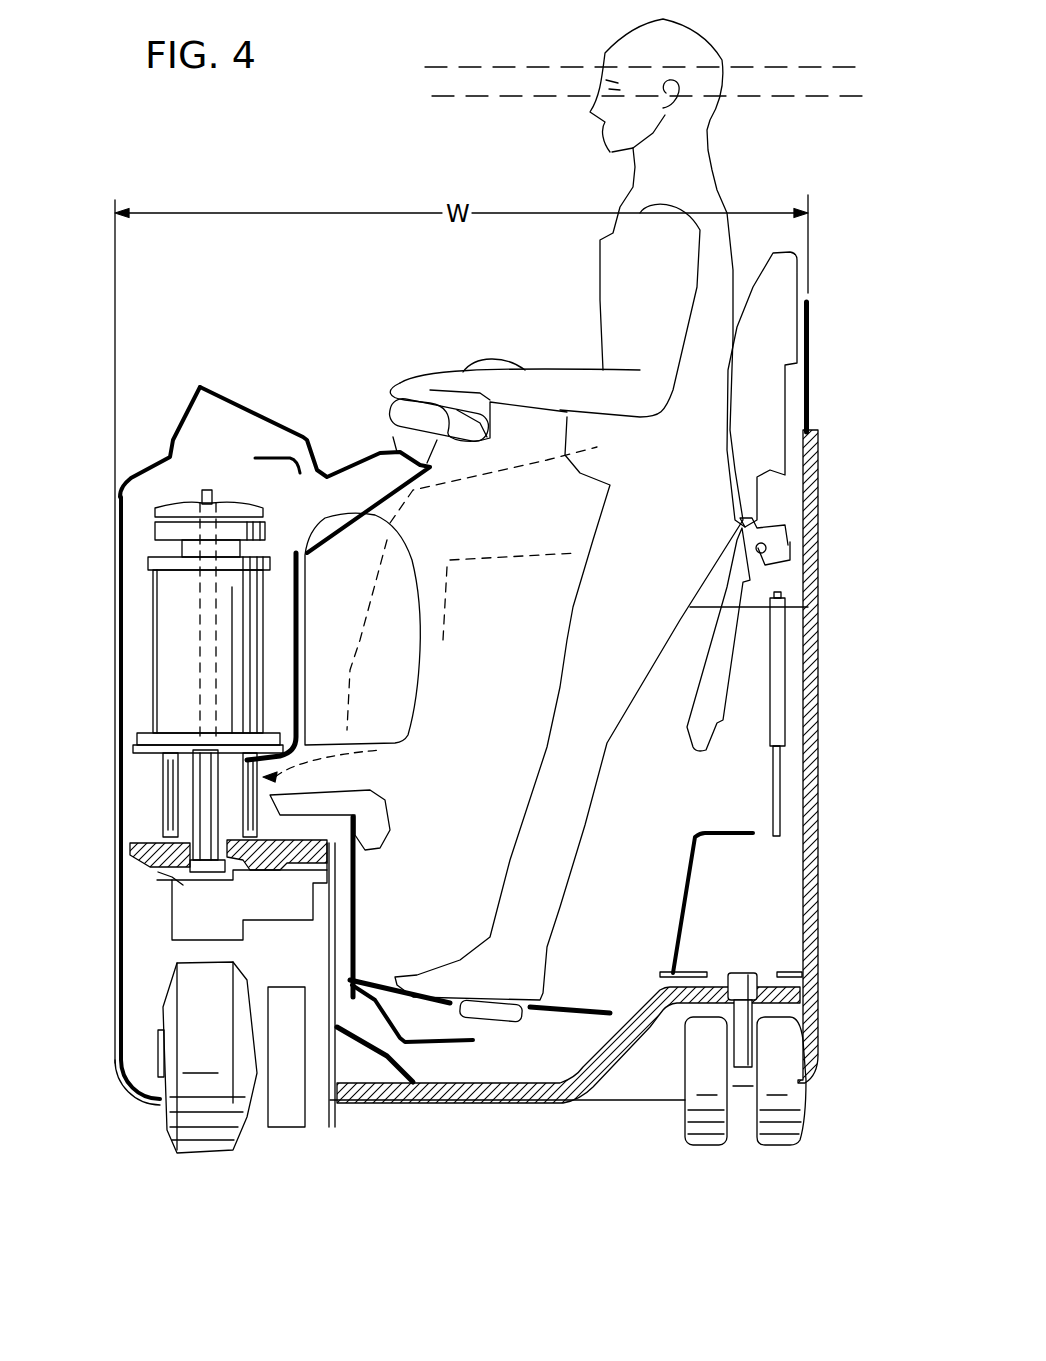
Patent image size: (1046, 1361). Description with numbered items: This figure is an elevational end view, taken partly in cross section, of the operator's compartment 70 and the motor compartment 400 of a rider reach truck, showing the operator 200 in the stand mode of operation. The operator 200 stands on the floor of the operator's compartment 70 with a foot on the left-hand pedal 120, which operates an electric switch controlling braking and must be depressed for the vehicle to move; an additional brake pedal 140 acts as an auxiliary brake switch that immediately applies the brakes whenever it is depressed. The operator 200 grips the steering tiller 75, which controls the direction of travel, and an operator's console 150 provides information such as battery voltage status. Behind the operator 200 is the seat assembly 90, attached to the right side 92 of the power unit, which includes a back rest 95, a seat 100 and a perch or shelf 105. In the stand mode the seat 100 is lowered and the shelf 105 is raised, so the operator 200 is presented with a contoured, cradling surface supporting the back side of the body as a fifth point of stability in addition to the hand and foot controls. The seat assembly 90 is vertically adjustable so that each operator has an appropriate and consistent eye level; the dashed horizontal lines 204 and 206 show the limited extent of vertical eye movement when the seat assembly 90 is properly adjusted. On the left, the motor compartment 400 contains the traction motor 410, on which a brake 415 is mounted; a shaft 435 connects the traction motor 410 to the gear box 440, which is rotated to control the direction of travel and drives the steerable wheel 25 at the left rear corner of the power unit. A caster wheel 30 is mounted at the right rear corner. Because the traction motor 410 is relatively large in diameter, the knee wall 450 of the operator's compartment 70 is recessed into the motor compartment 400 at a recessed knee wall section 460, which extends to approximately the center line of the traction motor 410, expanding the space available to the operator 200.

The steerable wheel 25 is at (163, 1127).
The caster wheel 30 is at (807, 1117).
The operator's compartment 70 is at (507, 703).
The steering tiller 75 is at (391, 403).
The seat assembly 90 is at (815, 267).
The right side 92 is at (820, 912).
The back rest 95 is at (780, 335).
The seat 100 is at (787, 672).
The perch or shelf 105 is at (760, 495).
The left-hand pedal 120 is at (505, 1015).
The pedal 140 is at (365, 803).
The operator's console 150 is at (246, 408).
The operator 200 is at (728, 182).
The dashed horizontal line 204 is at (785, 63).
The dashed horizontal line 206 is at (780, 97).
The motor compartment 400 is at (167, 487).
The traction motor 410 is at (160, 640).
The brake 415 is at (160, 532).
The shaft 435 is at (197, 815).
The gear box 440 is at (183, 920).
The knee wall 450 is at (310, 683).
The recessed knee wall section 460 is at (323, 769).